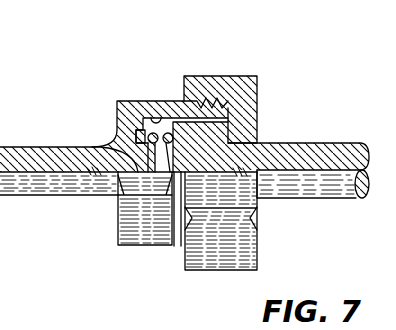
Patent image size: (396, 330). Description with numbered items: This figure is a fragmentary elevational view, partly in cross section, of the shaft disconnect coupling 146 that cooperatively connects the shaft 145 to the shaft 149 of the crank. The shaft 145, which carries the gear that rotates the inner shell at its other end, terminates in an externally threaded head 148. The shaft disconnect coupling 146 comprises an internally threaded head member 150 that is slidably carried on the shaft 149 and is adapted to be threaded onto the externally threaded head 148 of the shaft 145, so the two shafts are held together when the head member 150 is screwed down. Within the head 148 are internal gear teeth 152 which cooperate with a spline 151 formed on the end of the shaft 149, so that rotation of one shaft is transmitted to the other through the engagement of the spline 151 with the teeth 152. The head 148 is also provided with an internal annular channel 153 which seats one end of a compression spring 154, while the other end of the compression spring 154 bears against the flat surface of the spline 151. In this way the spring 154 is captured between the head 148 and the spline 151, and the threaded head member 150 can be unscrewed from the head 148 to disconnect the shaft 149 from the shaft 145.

The shaft 145 is at (44, 146).
The shaft disconnect coupling 146 is at (146, 252).
The externally threaded head 148 is at (118, 100).
The shaft 149 is at (331, 144).
The internally threaded head member 150 is at (222, 76).
The spline 151 is at (230, 132).
The internal gear teeth 152 is at (153, 117).
The internal annular channel 153 is at (163, 172).
The compression spring 154 is at (142, 172).